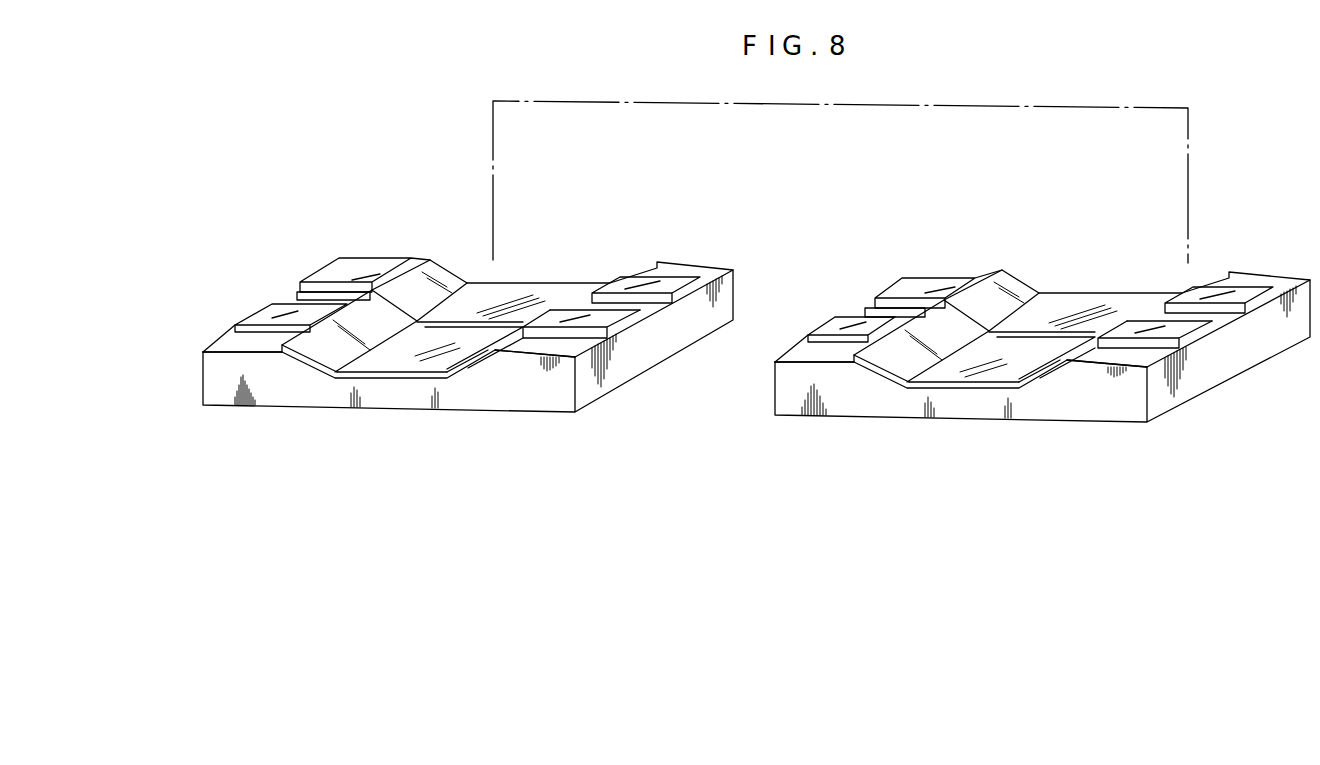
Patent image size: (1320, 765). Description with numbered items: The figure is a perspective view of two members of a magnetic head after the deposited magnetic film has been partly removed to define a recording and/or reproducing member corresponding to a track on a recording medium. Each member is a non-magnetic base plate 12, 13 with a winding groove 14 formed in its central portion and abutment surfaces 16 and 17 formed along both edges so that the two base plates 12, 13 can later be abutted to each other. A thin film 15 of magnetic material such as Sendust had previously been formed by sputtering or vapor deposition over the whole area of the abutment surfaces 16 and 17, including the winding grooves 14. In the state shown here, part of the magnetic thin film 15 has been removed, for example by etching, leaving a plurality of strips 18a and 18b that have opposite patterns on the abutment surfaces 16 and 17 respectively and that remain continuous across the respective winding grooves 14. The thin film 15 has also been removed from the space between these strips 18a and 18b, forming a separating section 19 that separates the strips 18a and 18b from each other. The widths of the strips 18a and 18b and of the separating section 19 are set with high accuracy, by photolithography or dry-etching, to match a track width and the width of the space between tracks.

The non-magnetic base plate 12 is at (488, 413).
The non-magnetic base plate 13 is at (1097, 422).
The winding groove 14 is at (408, 353).
The magnetic thin film 15 is at (347, 373).
The abutment surface 16 is at (805, 352).
The abutment surface 17 is at (243, 348).
The strip 18a is at (272, 315).
The strip 18b is at (330, 280).
The separating section 19 is at (297, 296).